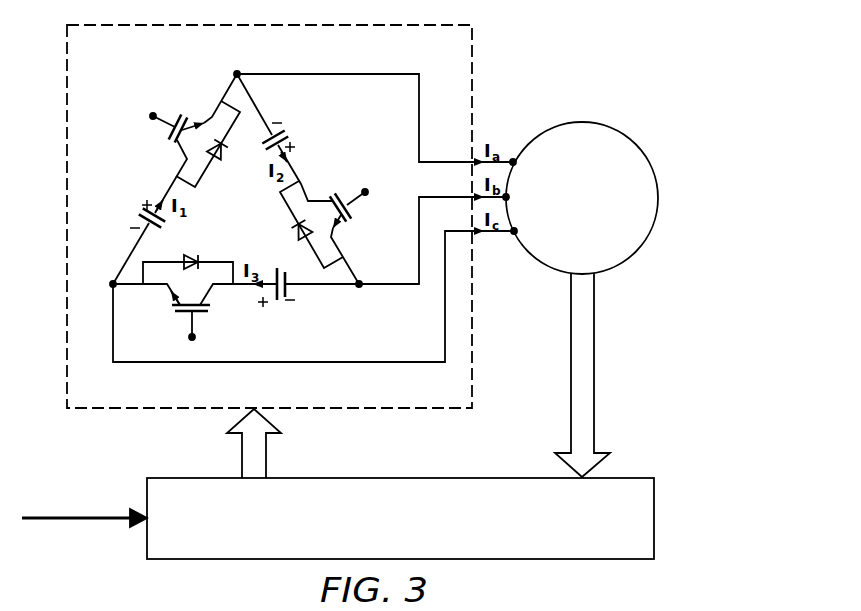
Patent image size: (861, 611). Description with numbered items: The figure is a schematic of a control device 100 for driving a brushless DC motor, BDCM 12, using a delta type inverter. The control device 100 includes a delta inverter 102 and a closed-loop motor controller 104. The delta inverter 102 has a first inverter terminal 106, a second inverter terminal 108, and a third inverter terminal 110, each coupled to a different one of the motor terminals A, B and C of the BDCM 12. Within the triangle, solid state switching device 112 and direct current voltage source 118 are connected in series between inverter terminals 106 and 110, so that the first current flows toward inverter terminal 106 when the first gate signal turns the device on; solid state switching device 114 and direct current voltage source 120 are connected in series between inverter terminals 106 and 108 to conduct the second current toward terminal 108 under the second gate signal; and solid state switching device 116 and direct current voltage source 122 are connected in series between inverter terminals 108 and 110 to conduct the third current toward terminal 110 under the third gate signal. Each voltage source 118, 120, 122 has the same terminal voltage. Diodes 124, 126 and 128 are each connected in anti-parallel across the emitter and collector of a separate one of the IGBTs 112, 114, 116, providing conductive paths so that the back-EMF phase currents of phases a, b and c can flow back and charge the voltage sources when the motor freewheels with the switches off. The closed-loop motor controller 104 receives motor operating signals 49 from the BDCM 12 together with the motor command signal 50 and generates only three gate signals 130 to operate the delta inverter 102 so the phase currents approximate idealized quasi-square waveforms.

The control device 100 is at (106, 439).
The delta inverter 102 is at (472, 66).
The closed-loop motor controller 104 is at (654, 518).
The first inverter terminal 106 is at (237, 74).
The second inverter terminal 108 is at (359, 285).
The third inverter terminal 110 is at (113, 284).
The solid state switching device 112 is at (182, 114).
The solid state switching device 114 is at (352, 218).
The solid state switching device 116 is at (200, 316).
The direct current voltage source 118 is at (140, 205).
The direct current voltage source 120 is at (287, 129).
The direct current voltage source 122 is at (288, 288).
The diode 124 is at (218, 160).
The diode 126 is at (194, 258).
The diode 128 is at (295, 224).
The gate signals 130 is at (247, 458).
The BDCM 12 is at (650, 162).
The motor operating signals 49 is at (594, 422).
The motor command signal 50 is at (97, 520).